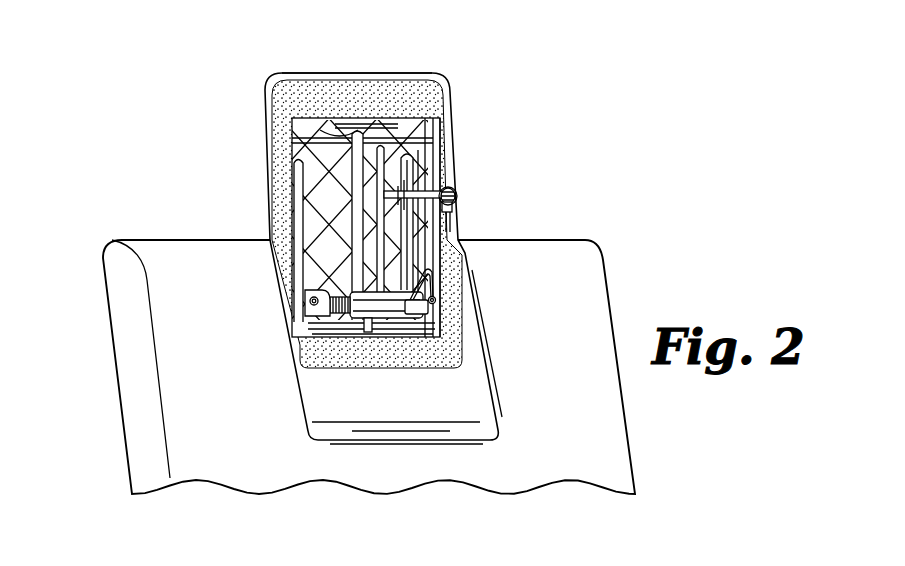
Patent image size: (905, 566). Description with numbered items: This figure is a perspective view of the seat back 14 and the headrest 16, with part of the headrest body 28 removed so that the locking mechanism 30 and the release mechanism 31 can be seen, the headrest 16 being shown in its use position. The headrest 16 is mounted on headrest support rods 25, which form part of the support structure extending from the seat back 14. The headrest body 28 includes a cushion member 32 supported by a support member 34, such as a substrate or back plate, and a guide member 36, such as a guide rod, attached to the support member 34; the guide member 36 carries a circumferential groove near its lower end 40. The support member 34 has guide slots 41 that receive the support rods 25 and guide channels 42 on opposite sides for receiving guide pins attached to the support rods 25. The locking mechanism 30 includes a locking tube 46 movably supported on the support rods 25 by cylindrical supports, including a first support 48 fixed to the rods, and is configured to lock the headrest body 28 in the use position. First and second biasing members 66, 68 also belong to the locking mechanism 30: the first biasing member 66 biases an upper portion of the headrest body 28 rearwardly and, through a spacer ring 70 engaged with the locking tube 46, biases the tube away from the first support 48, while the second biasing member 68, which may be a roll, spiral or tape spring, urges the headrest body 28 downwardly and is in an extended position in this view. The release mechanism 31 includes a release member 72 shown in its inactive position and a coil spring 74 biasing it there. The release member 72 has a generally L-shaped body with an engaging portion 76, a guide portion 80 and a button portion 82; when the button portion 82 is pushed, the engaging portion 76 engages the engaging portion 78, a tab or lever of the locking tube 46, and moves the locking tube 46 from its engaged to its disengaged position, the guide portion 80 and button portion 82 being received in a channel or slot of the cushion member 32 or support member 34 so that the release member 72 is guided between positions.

The seat back 14 is at (100, 240).
The headrest 16 is at (262, 46).
The headrest support rods 25 is at (312, 296).
The headrest body 28 is at (255, 124).
The locking mechanism 30 is at (342, 276).
The release mechanism 31 is at (458, 180).
The cushion member 32 is at (398, 73).
The support member 34 is at (422, 130).
The guide member 36 is at (350, 168).
The lower end 40 is at (377, 320).
The guide slots 41 is at (300, 215).
The guide channels 42 is at (418, 186).
The locking tube 46 is at (468, 285).
The first cylindrical support 48 is at (305, 313).
The first biasing member 66 is at (345, 308).
The second biasing member 68 is at (376, 150).
The ring 70 is at (335, 318).
The release member 72 is at (449, 216).
The coil spring 74 is at (454, 195).
The engaging portion 76 is at (427, 274).
The engaging portion 78 is at (433, 290).
The guide portion 80 is at (400, 190).
The button portion 82 is at (453, 205).